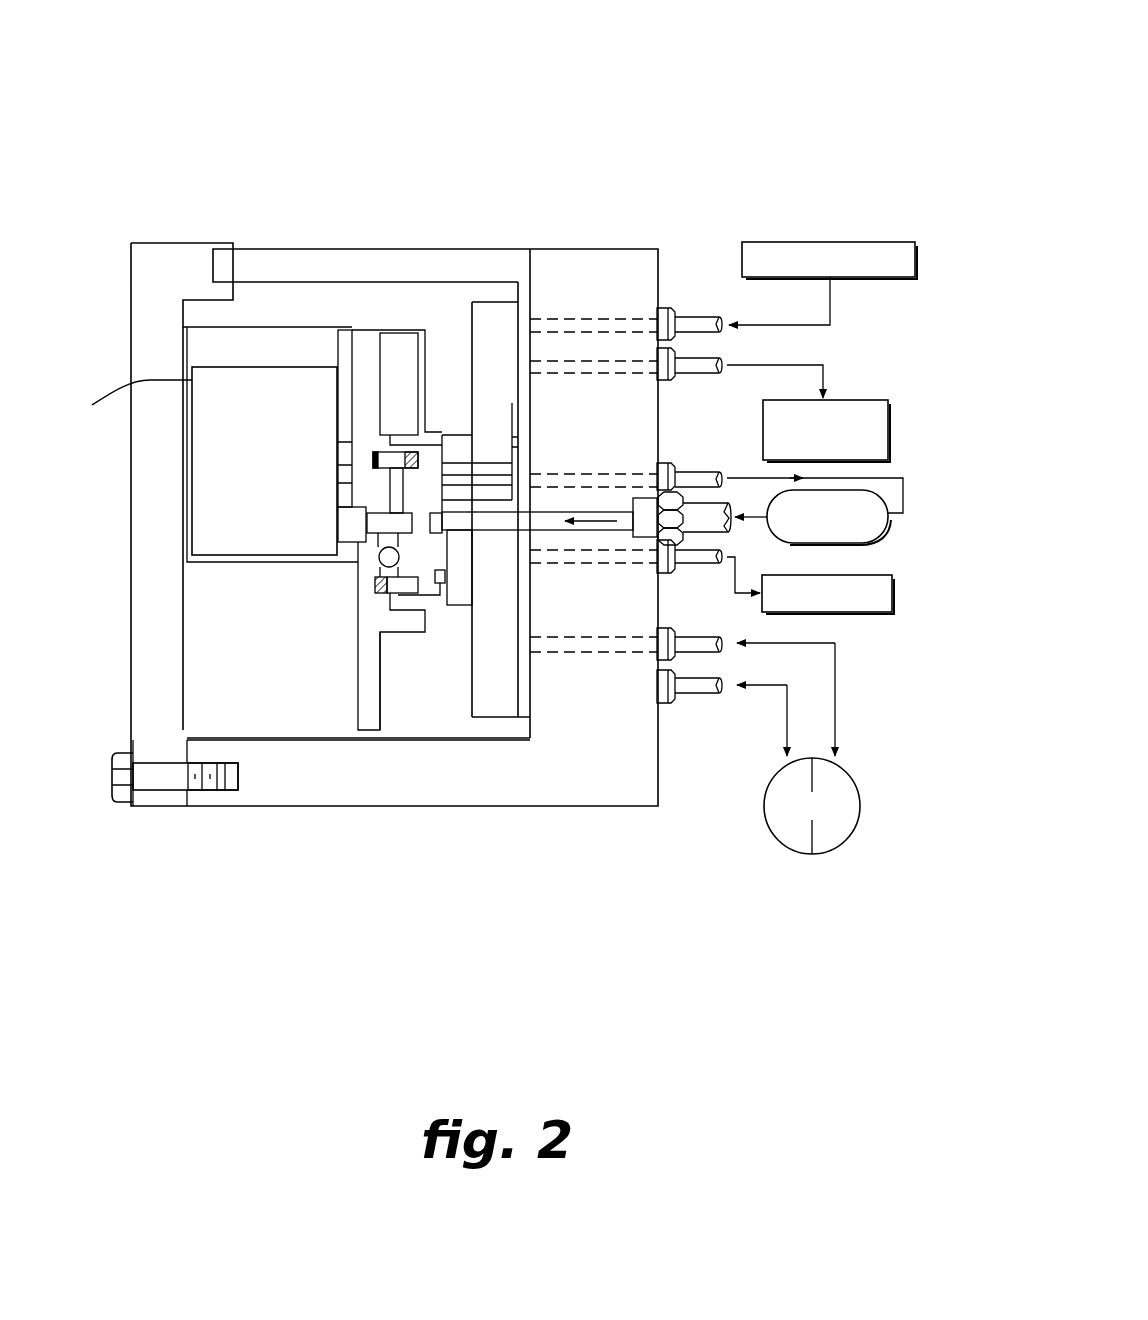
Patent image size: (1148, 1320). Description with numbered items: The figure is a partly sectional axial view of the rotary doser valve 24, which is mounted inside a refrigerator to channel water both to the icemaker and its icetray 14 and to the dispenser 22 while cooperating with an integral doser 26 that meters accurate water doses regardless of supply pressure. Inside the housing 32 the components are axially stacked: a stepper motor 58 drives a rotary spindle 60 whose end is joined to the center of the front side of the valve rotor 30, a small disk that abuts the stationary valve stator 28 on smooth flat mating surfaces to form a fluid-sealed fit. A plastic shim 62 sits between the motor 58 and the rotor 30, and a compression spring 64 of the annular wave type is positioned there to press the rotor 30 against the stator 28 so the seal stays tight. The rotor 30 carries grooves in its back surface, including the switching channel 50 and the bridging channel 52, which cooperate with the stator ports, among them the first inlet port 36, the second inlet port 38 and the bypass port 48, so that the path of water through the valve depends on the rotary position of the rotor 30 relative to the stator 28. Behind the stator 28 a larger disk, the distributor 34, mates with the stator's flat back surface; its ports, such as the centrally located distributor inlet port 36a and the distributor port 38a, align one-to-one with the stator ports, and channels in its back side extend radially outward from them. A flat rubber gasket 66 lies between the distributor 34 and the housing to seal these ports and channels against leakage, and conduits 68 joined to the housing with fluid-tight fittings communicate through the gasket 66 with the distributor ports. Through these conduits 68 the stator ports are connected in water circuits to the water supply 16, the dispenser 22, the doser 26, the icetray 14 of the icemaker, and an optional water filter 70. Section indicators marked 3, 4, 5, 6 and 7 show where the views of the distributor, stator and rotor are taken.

The icetray 14 is at (892, 605).
The water supply 16 is at (917, 270).
The dispenser 22 is at (888, 400).
The rotary doser valve 24 is at (660, 238).
The doser 26 is at (864, 806).
The valve stator 28 is at (453, 605).
The valve rotor 30 is at (430, 643).
The housing 32 is at (621, 763).
The distributor 34 is at (503, 717).
The first inlet port 36 is at (487, 530).
The distributor inlet port 36a is at (460, 530).
The second inlet port 38 is at (457, 463).
The distributor port 38a is at (482, 462).
The bypass port 48 is at (498, 500).
The switching channel 50 is at (437, 530).
The bridging channel 52 is at (430, 597).
The stepper motor 58 is at (278, 455).
The rotary spindle 60 is at (378, 525).
The shim 62 is at (365, 627).
The compression spring 64 is at (382, 455).
The gasket 66 is at (518, 302).
The conduits 68 is at (677, 470).
The water filter 70 is at (880, 540).
The section line 3 is at (587, 57).
The section line 4 is at (561, 527).
The section line 5 is at (535, 77).
The section line 6 is at (490, 531).
The section line 7 is at (470, 147).